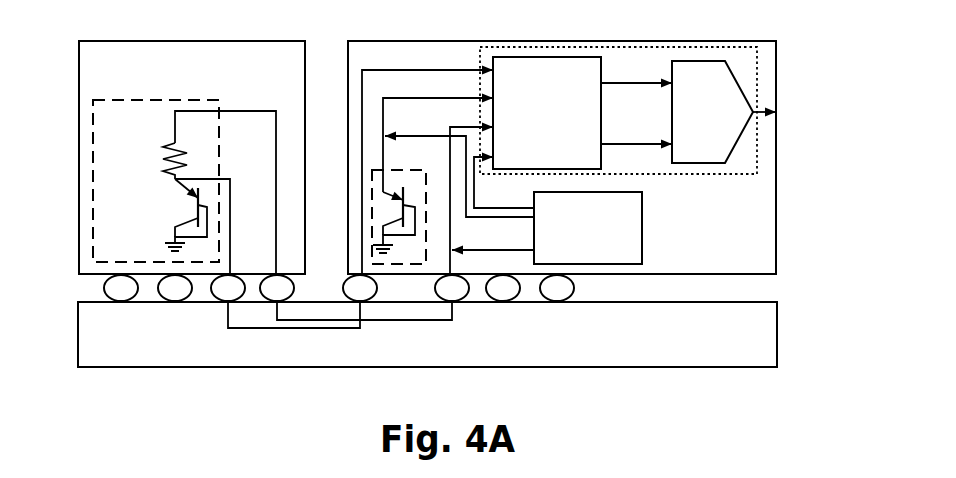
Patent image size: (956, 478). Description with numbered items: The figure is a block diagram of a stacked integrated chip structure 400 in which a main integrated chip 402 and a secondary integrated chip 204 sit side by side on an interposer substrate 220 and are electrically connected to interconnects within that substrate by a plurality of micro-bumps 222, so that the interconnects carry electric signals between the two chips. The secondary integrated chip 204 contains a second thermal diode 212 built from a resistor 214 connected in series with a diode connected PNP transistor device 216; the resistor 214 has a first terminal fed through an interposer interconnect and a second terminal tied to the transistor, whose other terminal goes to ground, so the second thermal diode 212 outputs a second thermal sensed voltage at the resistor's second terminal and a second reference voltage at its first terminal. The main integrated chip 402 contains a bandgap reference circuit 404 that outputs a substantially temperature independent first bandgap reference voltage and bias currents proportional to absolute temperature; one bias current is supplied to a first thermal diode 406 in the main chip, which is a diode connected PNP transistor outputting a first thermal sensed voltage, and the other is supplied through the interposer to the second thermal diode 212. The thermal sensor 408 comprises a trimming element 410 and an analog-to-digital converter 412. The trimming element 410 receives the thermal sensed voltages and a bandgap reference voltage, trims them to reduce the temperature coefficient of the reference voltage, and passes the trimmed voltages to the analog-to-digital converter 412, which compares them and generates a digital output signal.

The stacked integrated chip structure 400 is at (100, 17).
The secondary integrated chip 204 is at (305, 42).
The second thermal diode 212 is at (199, 100).
The resistor 214 is at (144, 150).
The diode connected PNP transistor device 216 is at (154, 215).
The micro-bumps 222 is at (104, 289).
The interposer substrate 220 is at (777, 331).
The main integrated chip 402 is at (750, 41).
The bandgap reference circuit 404 is at (570, 249).
The first thermal diode 406 is at (390, 170).
The thermal sensor 408 is at (705, 174).
The trimming element 410 is at (529, 149).
The analog-to-digital converter (ADC) 412 is at (689, 139).